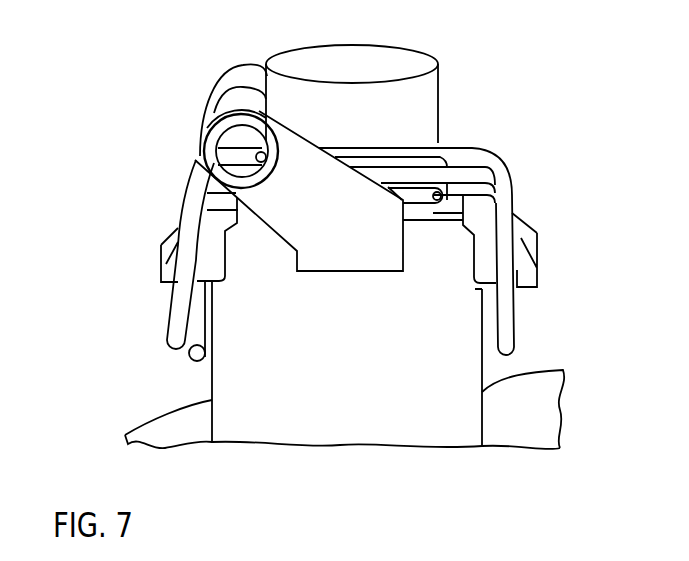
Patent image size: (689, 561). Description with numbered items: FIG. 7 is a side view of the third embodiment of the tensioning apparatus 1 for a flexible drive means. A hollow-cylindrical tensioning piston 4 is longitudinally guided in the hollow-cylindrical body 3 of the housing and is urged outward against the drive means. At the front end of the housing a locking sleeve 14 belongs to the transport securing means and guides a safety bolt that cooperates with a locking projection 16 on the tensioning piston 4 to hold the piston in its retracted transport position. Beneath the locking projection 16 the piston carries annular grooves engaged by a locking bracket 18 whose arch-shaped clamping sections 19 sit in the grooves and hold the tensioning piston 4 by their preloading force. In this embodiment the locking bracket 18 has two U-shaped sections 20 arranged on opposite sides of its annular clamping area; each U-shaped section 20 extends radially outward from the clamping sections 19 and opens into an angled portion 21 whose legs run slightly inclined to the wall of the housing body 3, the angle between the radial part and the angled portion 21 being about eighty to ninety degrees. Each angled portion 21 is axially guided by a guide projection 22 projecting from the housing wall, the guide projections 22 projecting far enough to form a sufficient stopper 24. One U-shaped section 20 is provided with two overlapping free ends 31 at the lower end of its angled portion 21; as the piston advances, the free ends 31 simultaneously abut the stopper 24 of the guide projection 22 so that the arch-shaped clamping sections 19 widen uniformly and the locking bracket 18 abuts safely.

The tensioning apparatus 1 is at (519, 100).
The hollow-cylindrical body 3 is at (337, 428).
The tensioning piston 4 is at (384, 56).
The locking sleeve 14 is at (217, 147).
The locking projection 16 is at (442, 149).
The locking bracket 18 is at (516, 168).
The arch-shaped clamping sections 19 is at (450, 166).
The U-shaped section 20 is at (176, 190).
The angled portion 21 is at (162, 243).
The guide projection 22 is at (158, 273).
The stopper 24 is at (170, 275).
The overlapping free ends 31 is at (189, 356).